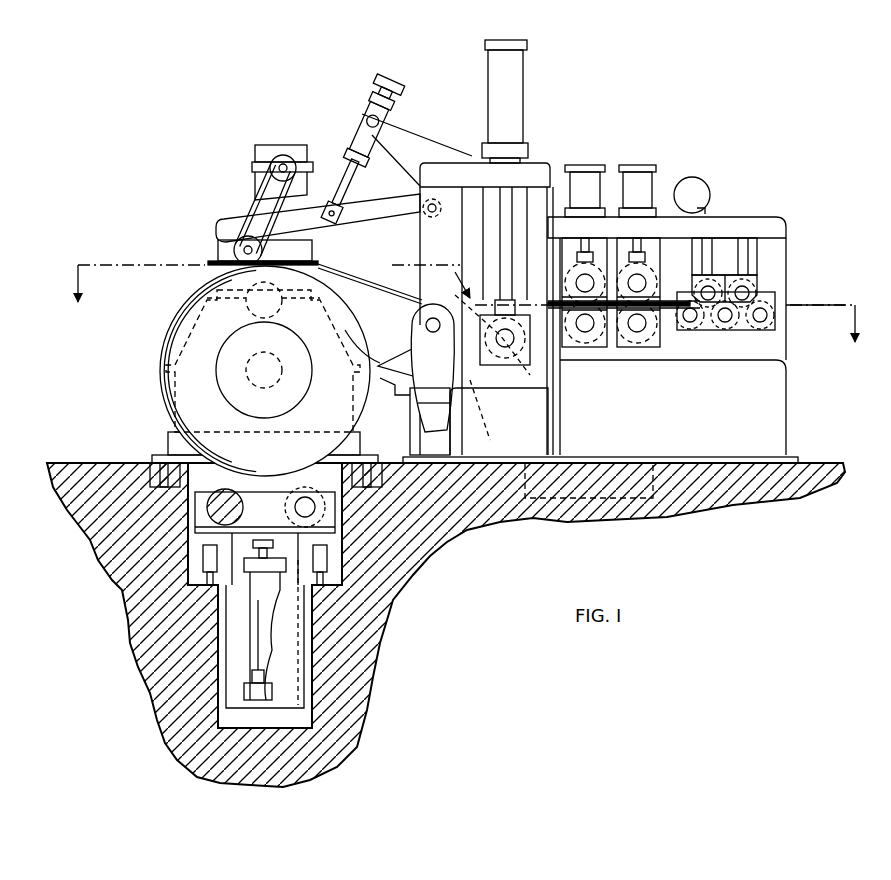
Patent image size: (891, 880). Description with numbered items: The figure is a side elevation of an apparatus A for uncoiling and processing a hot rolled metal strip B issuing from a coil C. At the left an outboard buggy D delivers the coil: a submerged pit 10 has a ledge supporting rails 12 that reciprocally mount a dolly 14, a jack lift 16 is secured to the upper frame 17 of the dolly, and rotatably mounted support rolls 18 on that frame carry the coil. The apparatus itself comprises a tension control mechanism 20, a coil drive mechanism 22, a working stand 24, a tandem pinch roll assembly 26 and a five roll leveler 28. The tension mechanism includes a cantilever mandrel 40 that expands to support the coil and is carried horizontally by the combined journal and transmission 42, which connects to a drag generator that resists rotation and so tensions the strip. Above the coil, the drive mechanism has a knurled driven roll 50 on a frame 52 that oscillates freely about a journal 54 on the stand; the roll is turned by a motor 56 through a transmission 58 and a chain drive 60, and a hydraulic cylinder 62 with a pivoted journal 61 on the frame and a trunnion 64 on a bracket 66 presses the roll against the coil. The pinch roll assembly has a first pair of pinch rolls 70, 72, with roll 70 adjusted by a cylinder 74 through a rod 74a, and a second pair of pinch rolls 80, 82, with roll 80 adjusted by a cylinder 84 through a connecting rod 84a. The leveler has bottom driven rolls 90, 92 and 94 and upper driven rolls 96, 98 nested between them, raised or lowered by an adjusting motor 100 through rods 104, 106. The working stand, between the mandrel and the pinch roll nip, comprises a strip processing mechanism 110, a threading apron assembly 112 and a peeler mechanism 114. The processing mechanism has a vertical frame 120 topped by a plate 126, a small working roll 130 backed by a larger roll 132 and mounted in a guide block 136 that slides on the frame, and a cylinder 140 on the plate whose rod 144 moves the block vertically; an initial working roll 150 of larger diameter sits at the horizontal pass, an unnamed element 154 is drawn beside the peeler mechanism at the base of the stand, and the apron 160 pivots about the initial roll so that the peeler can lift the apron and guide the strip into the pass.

The submerged pit 10 is at (310, 647).
The rails 12 is at (328, 562).
The dolly 14 is at (188, 523).
The jack lift 16 is at (250, 628).
The upper frame 17 is at (330, 522).
The support rolls 18 is at (295, 492).
The tension control mechanism 20 is at (190, 250).
The coil drive mechanism 22 is at (262, 145).
The working stand 24 is at (555, 180).
The tandem pinch roll assembly 26 is at (580, 395).
The five roll leveler 28 is at (740, 375).
The mandrel 40 is at (225, 395).
The combined journal and transmission 42 is at (313, 252).
The driven roll 50 is at (218, 268).
The frame 52 is at (225, 222).
The journal 54 is at (437, 200).
The motor 56 is at (345, 170).
The transmission 58 is at (303, 145).
The chain drive 60 is at (245, 210).
The pivoted journal 61 is at (338, 222).
The hydraulic cylinder 62 is at (400, 90).
The trunnion 64 is at (368, 115).
The bracket 66 is at (410, 130).
The pinch roll 70 is at (585, 335).
The pinch roll 72 is at (590, 338).
The cylinder 74 is at (590, 165).
The rod 74a is at (640, 265).
The pinch roll 80 is at (648, 277).
The pinch roll 82 is at (645, 340).
The cylinder 84 is at (670, 217).
The connecting rod 84a is at (673, 240).
The bottom driven roll 90 is at (693, 325).
The bottom driven roll 92 is at (730, 325).
The bottom driven roll 94 is at (770, 328).
The upper driven roll 96 is at (712, 285).
The upper driven roll 98 is at (760, 288).
The adjusting motor 100 is at (710, 197).
The rod 104 is at (700, 230).
The rod 106 is at (755, 252).
The strip processing mechanism 110 is at (412, 302).
The threading apron assembly 112 is at (372, 352).
The peeler mechanism 114 is at (400, 392).
The vertical frame 120 is at (553, 195).
The plate 126 is at (500, 165).
The working roll 130 is at (495, 360).
The backup roll 132 is at (488, 400).
The guide block 136 is at (545, 410).
The cylinder 140 is at (523, 70).
The reciprocal rod 144 is at (500, 237).
The initial working roll 150 is at (445, 410).
The block 154 is at (412, 410).
The apron 160 is at (395, 364).